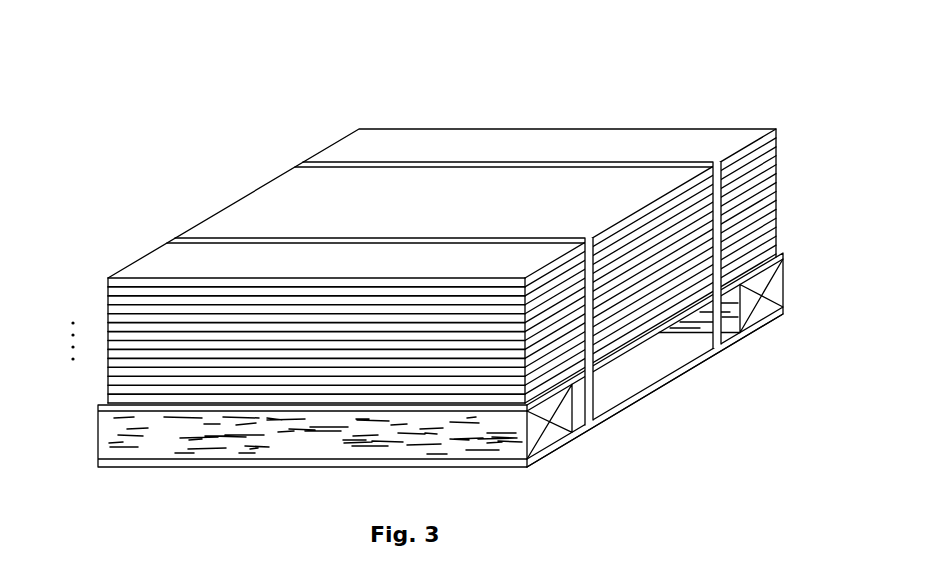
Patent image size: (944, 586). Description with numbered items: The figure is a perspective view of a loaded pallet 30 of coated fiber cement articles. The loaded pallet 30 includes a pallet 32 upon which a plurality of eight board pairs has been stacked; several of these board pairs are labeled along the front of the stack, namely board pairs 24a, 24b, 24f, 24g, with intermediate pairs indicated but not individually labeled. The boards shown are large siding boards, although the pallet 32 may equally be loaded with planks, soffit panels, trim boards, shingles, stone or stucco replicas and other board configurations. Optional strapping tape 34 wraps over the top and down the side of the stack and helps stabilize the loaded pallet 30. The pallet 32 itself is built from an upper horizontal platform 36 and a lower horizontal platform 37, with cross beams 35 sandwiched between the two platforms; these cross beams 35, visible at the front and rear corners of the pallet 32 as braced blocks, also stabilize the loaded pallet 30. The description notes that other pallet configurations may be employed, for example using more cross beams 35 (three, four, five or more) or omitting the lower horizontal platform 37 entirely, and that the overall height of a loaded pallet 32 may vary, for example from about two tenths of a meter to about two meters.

The loaded pallet 30 is at (439, 247).
The board pair 24a is at (102, 279).
The board pair 24b is at (102, 297).
The board pair 24f is at (102, 368).
The board pair 24g is at (102, 386).
The strapping tape 34 is at (307, 239).
The pallet 32 is at (463, 372).
The cross beams 35 is at (550, 436).
The upper horizontal platform 36 is at (627, 348).
The lower horizontal platform 37 is at (693, 367).